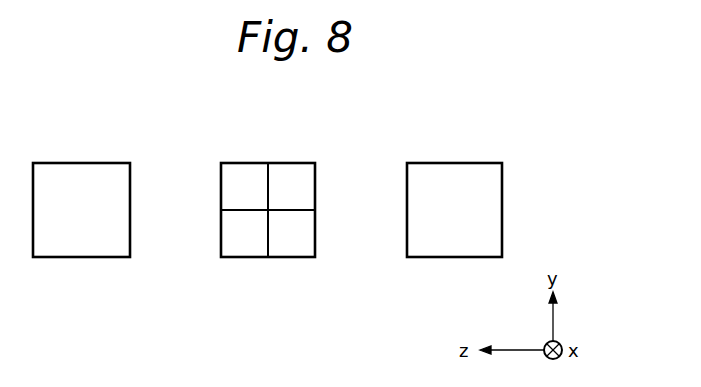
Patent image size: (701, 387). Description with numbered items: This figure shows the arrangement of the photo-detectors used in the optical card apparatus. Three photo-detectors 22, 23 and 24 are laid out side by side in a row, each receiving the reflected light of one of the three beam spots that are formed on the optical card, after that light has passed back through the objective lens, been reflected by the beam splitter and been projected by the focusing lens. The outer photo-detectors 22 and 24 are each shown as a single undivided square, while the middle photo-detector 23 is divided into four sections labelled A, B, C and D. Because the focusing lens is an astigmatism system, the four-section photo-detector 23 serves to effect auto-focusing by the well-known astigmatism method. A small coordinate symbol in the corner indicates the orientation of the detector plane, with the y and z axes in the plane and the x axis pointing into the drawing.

The photo-detector 22 is at (107, 257).
The photo-detector 23 is at (291, 257).
The photo-detector 24 is at (478, 257).